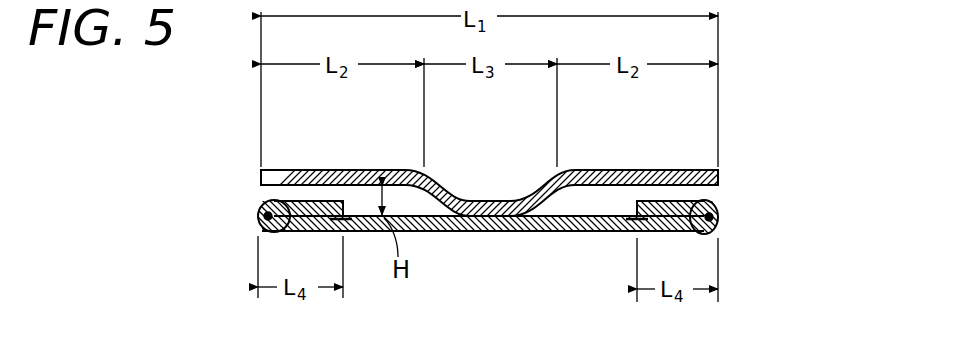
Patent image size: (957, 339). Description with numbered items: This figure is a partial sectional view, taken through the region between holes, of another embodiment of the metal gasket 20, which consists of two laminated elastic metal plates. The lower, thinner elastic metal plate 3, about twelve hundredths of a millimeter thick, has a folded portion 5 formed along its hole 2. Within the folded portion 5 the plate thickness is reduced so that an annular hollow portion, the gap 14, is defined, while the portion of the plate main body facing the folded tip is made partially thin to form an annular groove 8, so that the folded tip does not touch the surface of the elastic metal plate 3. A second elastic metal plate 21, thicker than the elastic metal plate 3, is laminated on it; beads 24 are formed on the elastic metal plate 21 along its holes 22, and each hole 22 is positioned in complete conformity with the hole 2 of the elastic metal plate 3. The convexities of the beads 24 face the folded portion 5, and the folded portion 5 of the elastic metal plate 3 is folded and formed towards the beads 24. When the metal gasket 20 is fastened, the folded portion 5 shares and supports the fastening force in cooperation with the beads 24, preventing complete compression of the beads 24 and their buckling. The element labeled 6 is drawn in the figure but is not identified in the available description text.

The hole 2 is at (260, 206).
The elastic metal plate 3 is at (488, 233).
The folded portion 5 is at (290, 200).
The rivet 6 is at (268, 238).
The annular groove 8 is at (360, 233).
The gap 14 is at (262, 228).
The metal gasket 20 is at (477, 257).
The elastic metal plate 21 is at (585, 170).
The holes 22 is at (258, 172).
The beads 24 is at (487, 203).